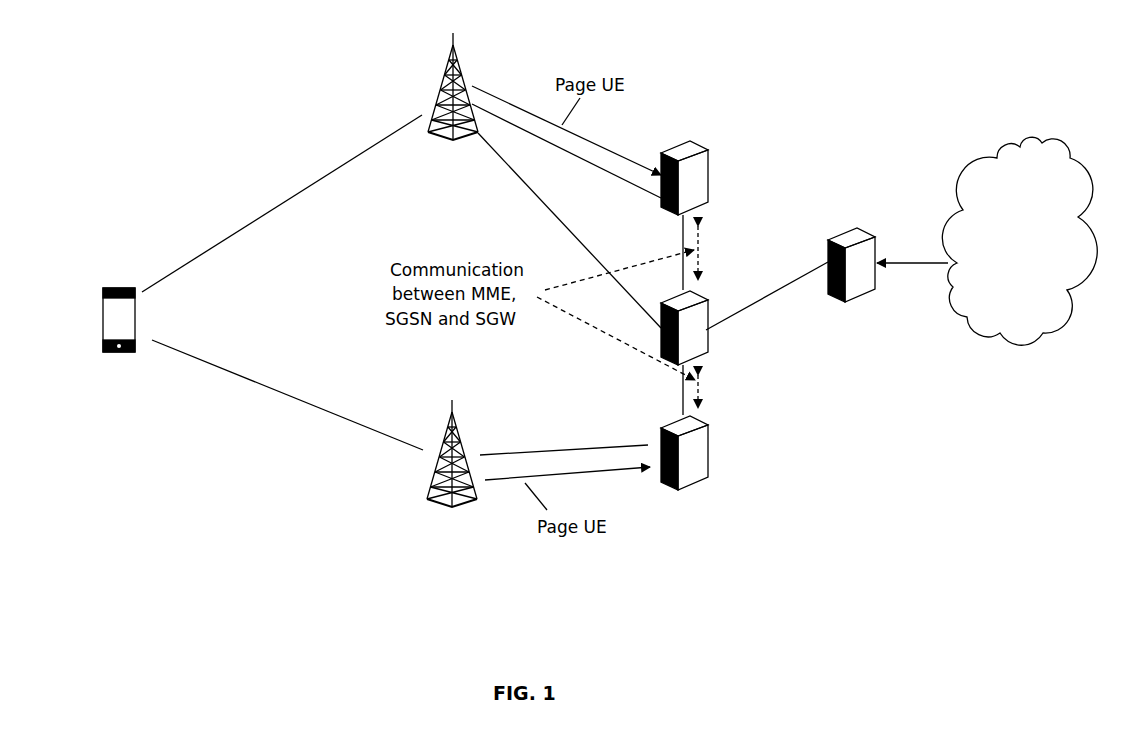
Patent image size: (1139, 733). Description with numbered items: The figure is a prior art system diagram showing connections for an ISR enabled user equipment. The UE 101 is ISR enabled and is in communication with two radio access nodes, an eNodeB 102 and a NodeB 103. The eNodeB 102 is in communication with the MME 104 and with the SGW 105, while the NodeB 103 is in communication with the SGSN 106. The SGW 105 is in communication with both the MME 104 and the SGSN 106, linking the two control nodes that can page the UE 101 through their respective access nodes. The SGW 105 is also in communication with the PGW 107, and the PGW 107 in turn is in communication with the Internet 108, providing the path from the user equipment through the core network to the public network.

The UE 101 is at (128, 275).
The eNodeB 102 is at (485, 52).
The NodeB 103 is at (485, 425).
The MME 104 is at (706, 163).
The SGW 105 is at (706, 313).
The SGSN 106 is at (706, 440).
The PGW 107 is at (870, 227).
The Internet 108 is at (1083, 147).